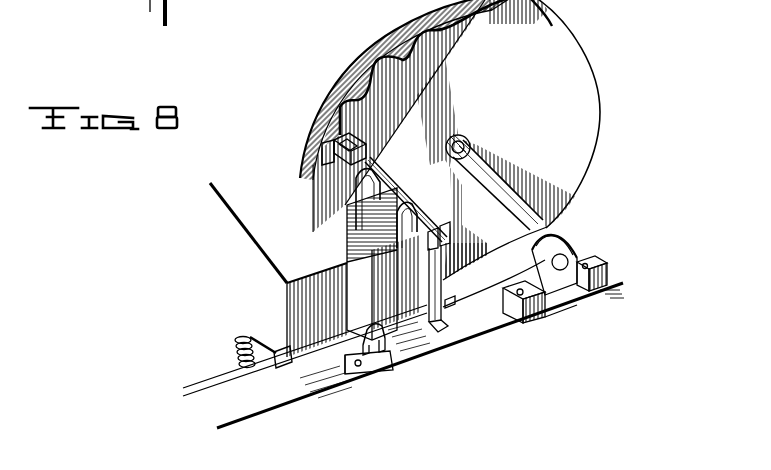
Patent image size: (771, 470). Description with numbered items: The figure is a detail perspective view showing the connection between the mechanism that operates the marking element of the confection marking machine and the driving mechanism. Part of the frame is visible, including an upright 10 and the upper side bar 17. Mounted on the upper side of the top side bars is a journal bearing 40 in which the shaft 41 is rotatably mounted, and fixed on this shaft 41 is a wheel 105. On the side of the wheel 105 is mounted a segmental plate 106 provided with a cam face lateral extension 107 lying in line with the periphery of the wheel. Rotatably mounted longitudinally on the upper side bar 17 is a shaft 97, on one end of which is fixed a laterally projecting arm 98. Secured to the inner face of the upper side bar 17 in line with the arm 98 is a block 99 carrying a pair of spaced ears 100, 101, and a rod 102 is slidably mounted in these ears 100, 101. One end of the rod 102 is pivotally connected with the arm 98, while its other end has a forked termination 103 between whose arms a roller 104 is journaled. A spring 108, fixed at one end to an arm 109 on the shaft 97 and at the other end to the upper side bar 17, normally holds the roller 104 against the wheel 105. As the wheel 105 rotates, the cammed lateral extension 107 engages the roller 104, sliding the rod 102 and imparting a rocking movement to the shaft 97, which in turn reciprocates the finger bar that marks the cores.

The upright 10 is at (150, 4).
The upper side bar 17 is at (304, 394).
The journal bearing 40 is at (576, 252).
The shaft 41 is at (548, 229).
The shaft 97 is at (192, 387).
The laterally projecting arm 98 is at (443, 288).
The block 99 is at (370, 240).
The ear 100 is at (421, 212).
The ear 101 is at (380, 167).
The rod 102 is at (427, 223).
The forked termination 103 is at (368, 150).
The roller 104 is at (348, 130).
The wheel 105 is at (594, 118).
The segmental plate 106 is at (440, 63).
The cam face lateral extension 107 is at (392, 53).
The spring 108 is at (239, 356).
The arm 109 is at (262, 347).